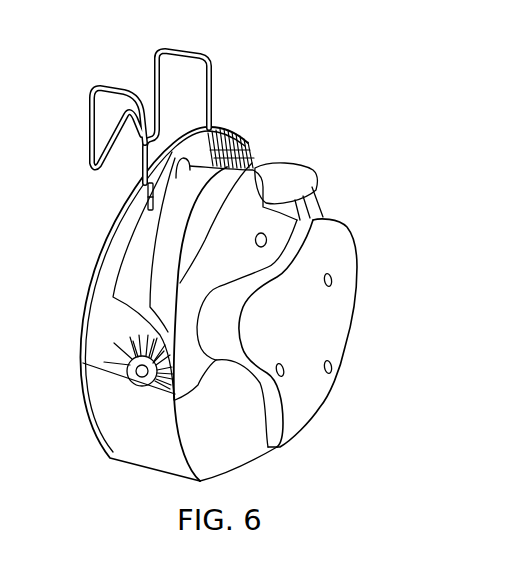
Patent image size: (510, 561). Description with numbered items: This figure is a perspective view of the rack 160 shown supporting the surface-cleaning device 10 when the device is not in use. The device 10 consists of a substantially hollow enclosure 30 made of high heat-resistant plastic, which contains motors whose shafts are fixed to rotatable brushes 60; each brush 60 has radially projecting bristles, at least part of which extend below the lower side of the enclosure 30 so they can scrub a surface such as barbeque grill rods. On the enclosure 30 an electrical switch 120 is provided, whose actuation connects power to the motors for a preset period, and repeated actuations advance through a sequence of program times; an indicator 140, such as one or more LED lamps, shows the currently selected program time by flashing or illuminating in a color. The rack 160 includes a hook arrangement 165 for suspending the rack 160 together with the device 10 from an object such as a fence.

The device 10 is at (389, 197).
The enclosure 30 is at (320, 249).
The rotatable brush 60 is at (250, 143).
The electrical switch 120 is at (259, 219).
The indicator 140 is at (312, 208).
The rack 160 is at (85, 291).
The hook arrangement 165 is at (214, 78).